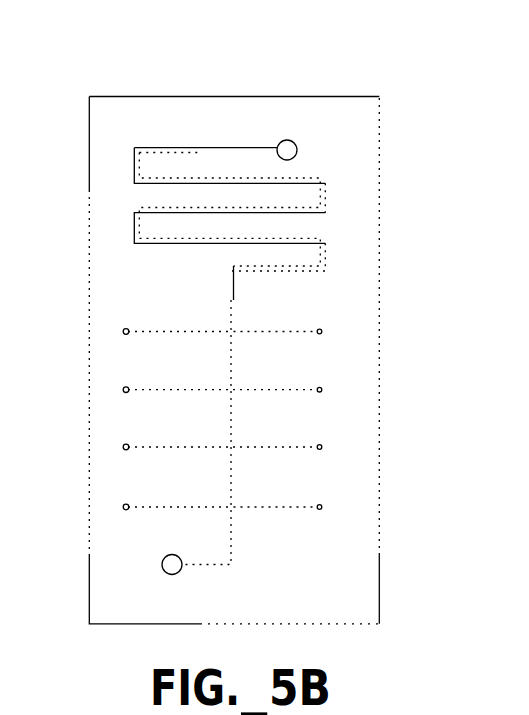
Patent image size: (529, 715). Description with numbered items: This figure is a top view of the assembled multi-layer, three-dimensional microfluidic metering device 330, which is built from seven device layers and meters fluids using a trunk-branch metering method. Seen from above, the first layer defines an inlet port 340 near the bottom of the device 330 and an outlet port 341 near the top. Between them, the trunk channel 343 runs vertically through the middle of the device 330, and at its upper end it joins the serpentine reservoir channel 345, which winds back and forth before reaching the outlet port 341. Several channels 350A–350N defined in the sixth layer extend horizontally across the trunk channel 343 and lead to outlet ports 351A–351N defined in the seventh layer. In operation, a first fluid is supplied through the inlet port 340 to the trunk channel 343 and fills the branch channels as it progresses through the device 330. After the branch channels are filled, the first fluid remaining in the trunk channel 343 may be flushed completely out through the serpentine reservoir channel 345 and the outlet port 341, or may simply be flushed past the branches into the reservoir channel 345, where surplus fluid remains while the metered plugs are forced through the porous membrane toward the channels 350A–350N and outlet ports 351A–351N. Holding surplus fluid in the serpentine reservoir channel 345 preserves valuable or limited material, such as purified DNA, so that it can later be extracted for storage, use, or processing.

The microfluidic metering device 330 is at (209, 69).
The outlet port 341 is at (288, 140).
The serpentine reservoir channel 345 is at (134, 166).
The trunk channel 343 is at (228, 300).
The channel 350N is at (295, 330).
The channel 350A is at (293, 508).
The outlet port 351N is at (124, 335).
The outlet port 351A is at (125, 505).
The inlet port 340 is at (172, 574).